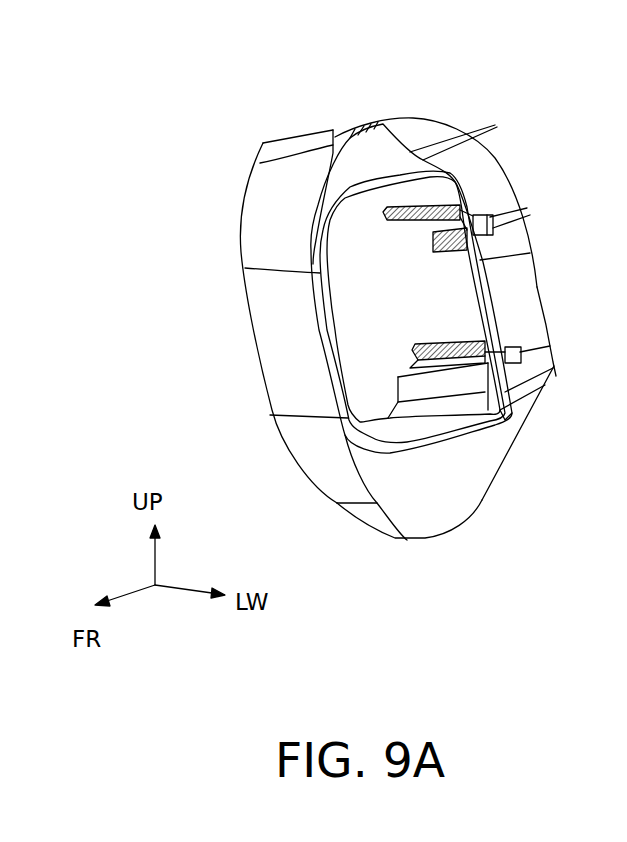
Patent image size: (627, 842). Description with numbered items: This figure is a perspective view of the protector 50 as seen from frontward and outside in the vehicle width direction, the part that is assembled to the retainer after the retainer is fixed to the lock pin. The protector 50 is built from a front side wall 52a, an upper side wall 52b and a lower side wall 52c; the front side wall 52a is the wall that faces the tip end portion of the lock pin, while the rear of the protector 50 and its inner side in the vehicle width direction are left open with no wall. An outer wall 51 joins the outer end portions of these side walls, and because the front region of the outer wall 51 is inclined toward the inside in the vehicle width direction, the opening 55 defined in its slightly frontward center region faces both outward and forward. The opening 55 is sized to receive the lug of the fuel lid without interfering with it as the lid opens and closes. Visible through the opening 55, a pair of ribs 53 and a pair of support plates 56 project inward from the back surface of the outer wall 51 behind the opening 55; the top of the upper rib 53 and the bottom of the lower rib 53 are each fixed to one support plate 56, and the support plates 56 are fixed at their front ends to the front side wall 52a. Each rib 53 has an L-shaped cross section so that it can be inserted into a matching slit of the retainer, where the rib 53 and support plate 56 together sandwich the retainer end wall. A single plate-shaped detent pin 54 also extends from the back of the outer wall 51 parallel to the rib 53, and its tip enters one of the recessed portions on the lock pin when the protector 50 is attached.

The protector 50 is at (350, 339).
The outer wall 51 is at (523, 310).
The front side wall 52a is at (285, 357).
The upper side wall 52b is at (347, 130).
The lower side wall 52c is at (447, 533).
The rib 53 is at (414, 345).
The detent pin 54 is at (507, 260).
The opening 55 is at (362, 246).
The support plate 56 is at (503, 425).